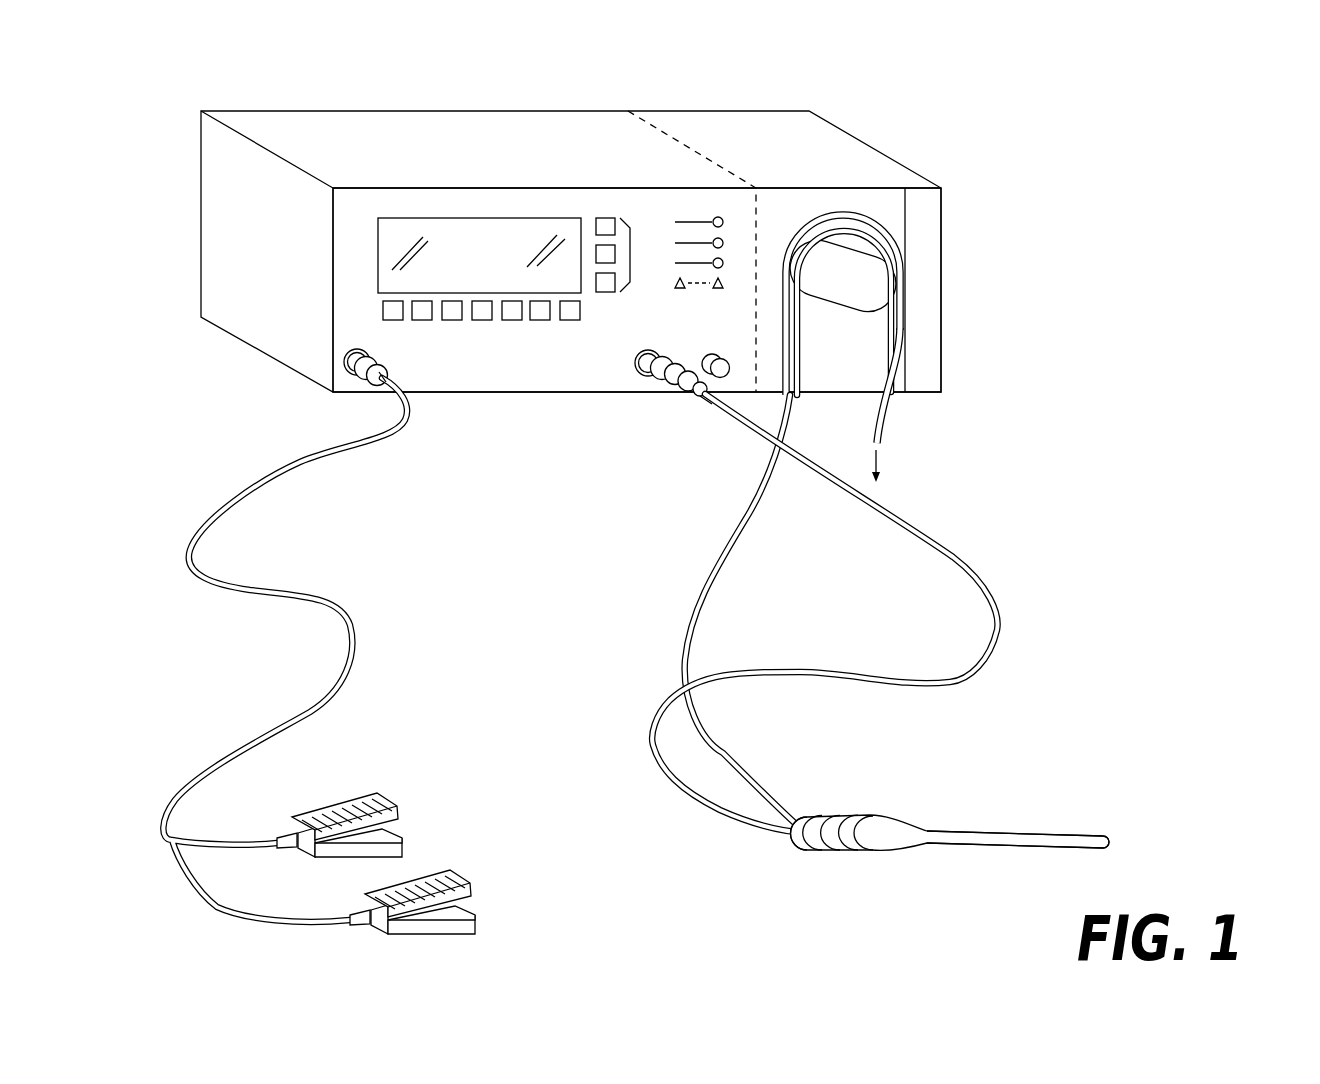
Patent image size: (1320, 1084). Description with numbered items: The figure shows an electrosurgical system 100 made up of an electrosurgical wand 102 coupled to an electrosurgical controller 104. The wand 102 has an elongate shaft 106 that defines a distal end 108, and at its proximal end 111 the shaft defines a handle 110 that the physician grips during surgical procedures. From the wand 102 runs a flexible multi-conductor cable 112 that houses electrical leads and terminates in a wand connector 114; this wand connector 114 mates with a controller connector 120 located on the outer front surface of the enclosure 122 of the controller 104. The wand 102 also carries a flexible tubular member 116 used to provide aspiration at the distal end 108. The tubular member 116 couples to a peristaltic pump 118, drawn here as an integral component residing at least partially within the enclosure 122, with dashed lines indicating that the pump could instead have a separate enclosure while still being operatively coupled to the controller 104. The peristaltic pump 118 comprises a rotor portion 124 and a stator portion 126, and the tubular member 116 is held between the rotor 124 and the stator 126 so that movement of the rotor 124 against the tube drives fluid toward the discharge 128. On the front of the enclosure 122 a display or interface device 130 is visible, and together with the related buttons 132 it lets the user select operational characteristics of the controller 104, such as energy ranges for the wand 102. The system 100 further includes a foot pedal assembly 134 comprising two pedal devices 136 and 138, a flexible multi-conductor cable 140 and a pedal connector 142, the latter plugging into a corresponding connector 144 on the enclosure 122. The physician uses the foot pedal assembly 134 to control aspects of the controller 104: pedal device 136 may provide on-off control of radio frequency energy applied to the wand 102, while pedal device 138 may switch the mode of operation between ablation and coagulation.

The electrosurgical system 100 is at (694, 499).
The electrosurgical wand 102 is at (908, 675).
The electrosurgical controller 104 is at (571, 260).
The elongate shaft 106 is at (1010, 832).
The distal end 108 is at (1104, 807).
The handle 110 is at (957, 850).
The proximal end 111 is at (805, 848).
The flexible multi-conductor cable 112 is at (972, 560).
The wand connector 114 is at (707, 405).
The flexible tubular member 116 is at (755, 779).
The peristaltic pump 118 is at (862, 264).
The controller connector 120 is at (635, 397).
The enclosure 122 is at (563, 394).
The rotor portion 124 is at (890, 292).
The stator portion 126 is at (878, 218).
The discharge 128 is at (905, 443).
The interface device 130 is at (484, 271).
The buttons 132 is at (393, 320).
The foot pedal assembly 134 is at (367, 659).
The pedal device 136 is at (403, 847).
The pedal device 138 is at (478, 927).
The flexible multi-conductor cable 140 is at (250, 593).
The pedal connector 142 is at (357, 387).
The connector 144 is at (347, 360).